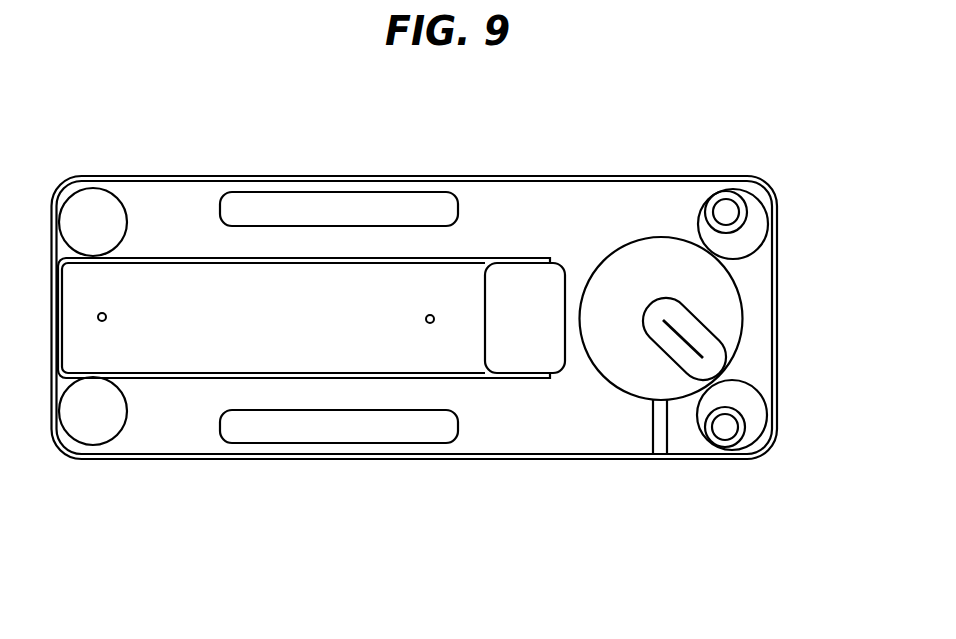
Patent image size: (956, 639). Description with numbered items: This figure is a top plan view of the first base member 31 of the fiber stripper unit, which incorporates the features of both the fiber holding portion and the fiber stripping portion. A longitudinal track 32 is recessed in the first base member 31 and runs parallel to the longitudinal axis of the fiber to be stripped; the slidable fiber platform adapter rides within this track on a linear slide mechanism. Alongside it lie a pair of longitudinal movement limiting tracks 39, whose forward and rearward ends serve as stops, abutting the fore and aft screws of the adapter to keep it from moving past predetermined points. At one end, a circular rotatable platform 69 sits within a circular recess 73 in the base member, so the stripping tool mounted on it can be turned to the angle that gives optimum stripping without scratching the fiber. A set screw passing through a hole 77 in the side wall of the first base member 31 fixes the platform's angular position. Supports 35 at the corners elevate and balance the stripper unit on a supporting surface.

The first base member 31 is at (727, 131).
The longitudinal track 32 is at (453, 282).
The supports 35 is at (91, 205).
The longitudinal movement limiting tracks 39 is at (358, 203).
The circular rotatable platform 69 is at (643, 260).
The circular recess 73 is at (736, 278).
The hole 77 is at (662, 445).